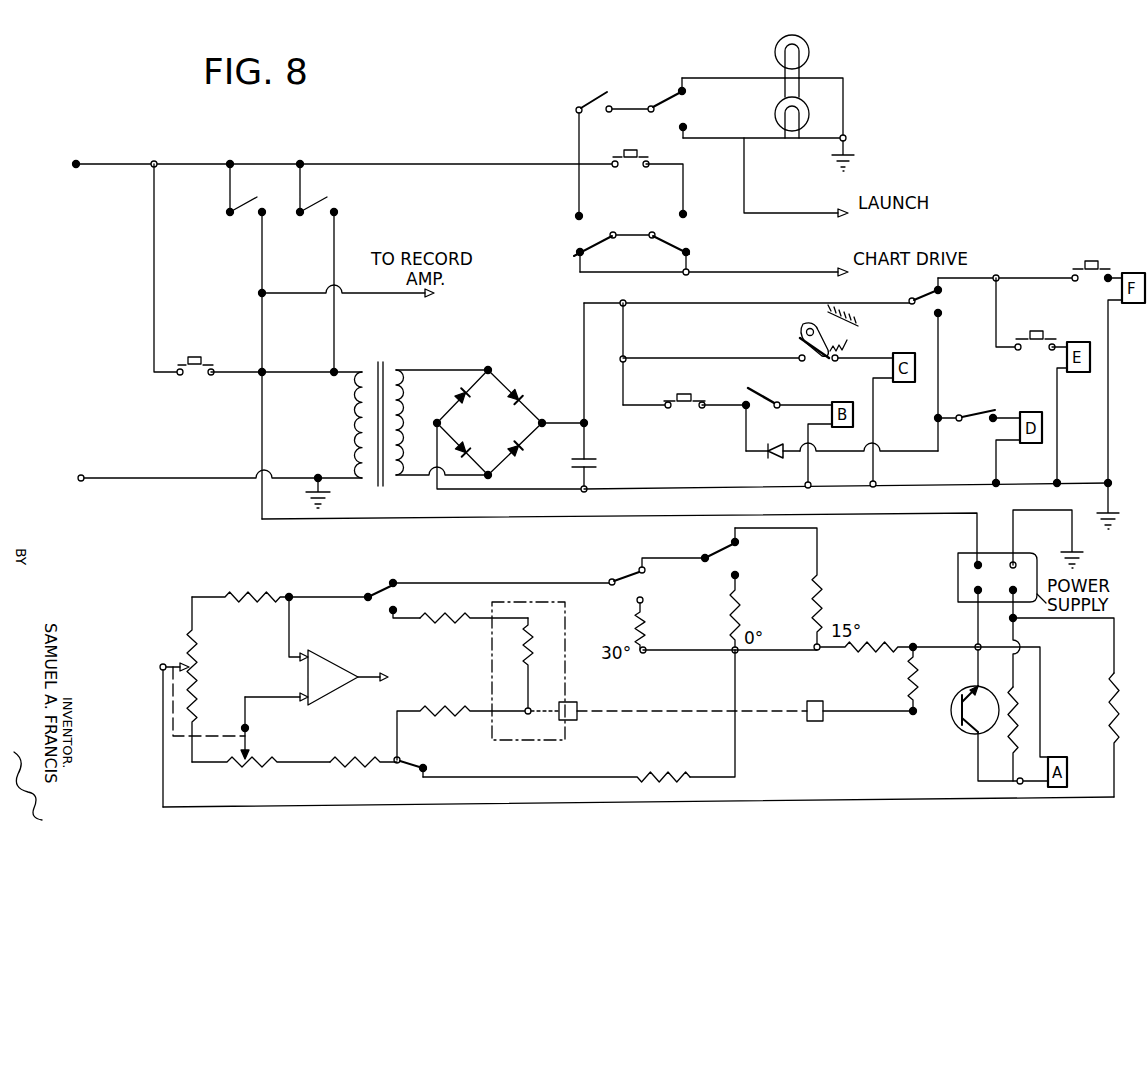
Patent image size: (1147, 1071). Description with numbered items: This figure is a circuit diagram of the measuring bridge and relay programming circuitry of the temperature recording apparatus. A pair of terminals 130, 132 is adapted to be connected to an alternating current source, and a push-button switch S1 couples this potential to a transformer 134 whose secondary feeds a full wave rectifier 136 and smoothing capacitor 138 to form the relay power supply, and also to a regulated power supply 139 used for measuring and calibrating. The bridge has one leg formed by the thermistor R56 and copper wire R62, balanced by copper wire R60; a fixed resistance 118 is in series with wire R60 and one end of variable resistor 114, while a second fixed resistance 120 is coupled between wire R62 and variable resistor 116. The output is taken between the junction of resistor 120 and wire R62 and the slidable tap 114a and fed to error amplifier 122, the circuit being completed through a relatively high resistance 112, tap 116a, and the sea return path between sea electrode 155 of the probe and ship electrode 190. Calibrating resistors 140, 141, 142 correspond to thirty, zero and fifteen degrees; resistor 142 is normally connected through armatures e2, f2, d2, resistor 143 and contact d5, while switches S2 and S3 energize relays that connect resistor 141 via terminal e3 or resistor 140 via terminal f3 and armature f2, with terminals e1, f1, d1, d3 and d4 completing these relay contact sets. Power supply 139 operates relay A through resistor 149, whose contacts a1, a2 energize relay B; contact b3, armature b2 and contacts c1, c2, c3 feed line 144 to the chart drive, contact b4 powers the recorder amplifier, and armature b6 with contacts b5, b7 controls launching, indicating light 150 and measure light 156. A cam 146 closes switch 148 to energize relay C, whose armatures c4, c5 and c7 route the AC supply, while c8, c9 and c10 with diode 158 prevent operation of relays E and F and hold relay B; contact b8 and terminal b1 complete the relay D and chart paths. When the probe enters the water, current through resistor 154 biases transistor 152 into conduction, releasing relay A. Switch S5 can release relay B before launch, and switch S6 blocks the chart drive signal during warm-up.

The terminal 130 is at (75, 163).
The terminal 132 is at (79, 476).
The transformer 134 is at (374, 364).
The full wave rectifier 136 is at (505, 436).
The smoothing capacitor 138 is at (600, 461).
The power supply 139 is at (958, 578).
The resistor 140 is at (648, 629).
The resistor 141 is at (740, 608).
The resistor 142 is at (826, 600).
The resistor 143 is at (660, 776).
The line 144 is at (810, 271).
The cam 146 is at (803, 333).
The switch 148 is at (818, 356).
The resistor 149 is at (1022, 703).
The indicating light 150 is at (779, 105).
The transistor 152 is at (958, 729).
The resistor 154 is at (908, 681).
The sea electrode 155 is at (576, 724).
The measure indicating light 156 is at (806, 46).
The diode 158 is at (780, 458).
The resistance 112 is at (1109, 713).
The variable resistor 114 is at (251, 766).
The slidable tap 114a is at (249, 729).
The variable resistor 116 is at (200, 659).
The slidable tap 116a is at (162, 664).
The fixed resistance 118 is at (356, 770).
The fixed resistance 120 is at (253, 591).
The error amplifier 122 is at (345, 665).
The electrode 190 is at (821, 722).
The push-button switch S1 is at (196, 366).
The switch S2 is at (1041, 333).
The switch S3 is at (1084, 263).
The switch S5 is at (684, 402).
The switch S6 is at (632, 160).
The thermistor R56 is at (528, 670).
The copper wire R60 is at (451, 708).
The copper wire R62 is at (438, 624).
The relay contact a1 is at (744, 411).
The relay contact a2 is at (762, 390).
The relay contact b1 is at (690, 254).
The relay armature b2 is at (670, 245).
The relay contact b3 is at (688, 213).
The relay contact b4 is at (242, 206).
The relay contact b5 is at (680, 87).
The relay armature b6 is at (653, 114).
The relay contact b7 is at (687, 124).
The relay contact b8 is at (972, 411).
The relay contact c1 is at (576, 255).
The relay armature c2 is at (610, 244).
The relay contact c3 is at (577, 213).
The relay armature c4 is at (591, 99).
The relay contact c5 is at (609, 114).
The relay contact c7 is at (313, 206).
The relay contact c8 is at (944, 292).
The relay armature c9 is at (910, 297).
The relay contact c10 is at (942, 316).
The relay contact d1 is at (396, 580).
The relay armature d2 is at (366, 593).
The relay contact d3 is at (390, 611).
The relay contact d4 is at (430, 768).
The relay contact d5 is at (404, 769).
The relay contact e1 is at (742, 541).
The relay armature e2 is at (708, 552).
The relay contact e3 is at (740, 574).
The relay contact f1 is at (649, 567).
The relay armature f2 is at (611, 578).
The relay contact f3 is at (646, 602).